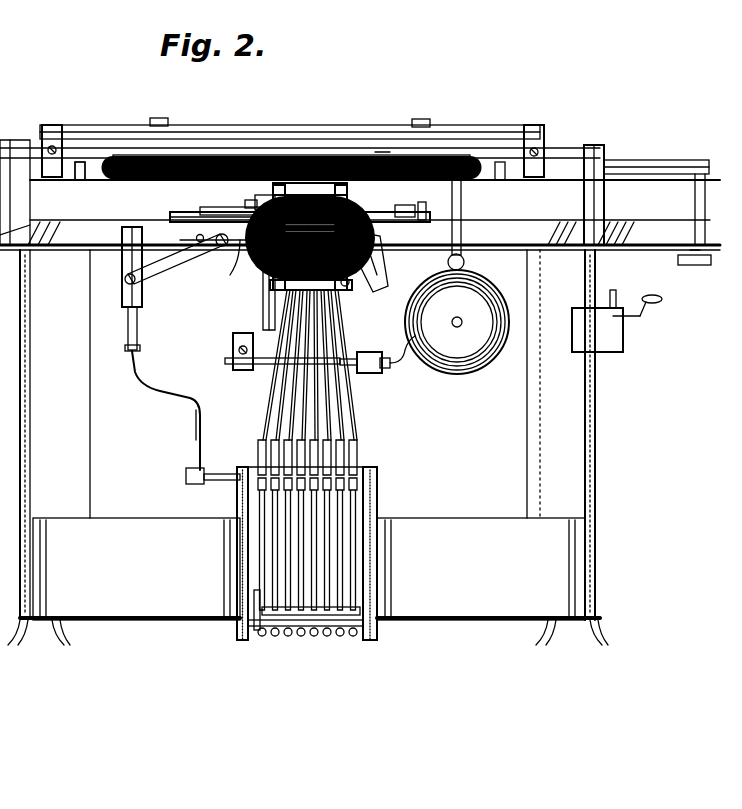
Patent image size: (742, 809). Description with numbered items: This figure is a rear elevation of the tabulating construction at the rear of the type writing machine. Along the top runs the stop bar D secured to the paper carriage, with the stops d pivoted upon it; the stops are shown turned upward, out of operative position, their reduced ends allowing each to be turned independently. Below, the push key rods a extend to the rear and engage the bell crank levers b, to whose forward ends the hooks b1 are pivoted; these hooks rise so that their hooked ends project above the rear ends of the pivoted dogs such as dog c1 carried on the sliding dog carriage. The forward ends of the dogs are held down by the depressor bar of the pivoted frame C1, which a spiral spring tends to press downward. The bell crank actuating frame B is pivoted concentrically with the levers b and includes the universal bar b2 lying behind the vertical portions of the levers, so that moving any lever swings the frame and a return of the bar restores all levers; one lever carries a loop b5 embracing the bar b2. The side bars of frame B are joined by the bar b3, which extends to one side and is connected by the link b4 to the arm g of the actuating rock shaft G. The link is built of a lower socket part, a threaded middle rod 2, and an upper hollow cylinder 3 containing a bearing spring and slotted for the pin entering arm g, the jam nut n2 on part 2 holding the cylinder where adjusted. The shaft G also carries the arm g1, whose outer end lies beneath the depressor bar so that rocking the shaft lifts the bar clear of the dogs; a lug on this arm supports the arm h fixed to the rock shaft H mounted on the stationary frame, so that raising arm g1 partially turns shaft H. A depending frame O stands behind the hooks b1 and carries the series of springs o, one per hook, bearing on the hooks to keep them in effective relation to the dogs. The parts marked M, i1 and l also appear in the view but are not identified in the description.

The stops d is at (278, 156).
The arm h is at (306, 156).
The hooks b1 is at (341, 180).
The rock shaft H is at (381, 152).
The stop bar D is at (72, 186).
The rods a is at (138, 181).
The arm g1 is at (255, 207).
The pivoted frame C1 is at (270, 201).
The dog c1 is at (311, 253).
The horizontal plate M is at (200, 214).
The arm g is at (195, 266).
The rock shaft G is at (282, 302).
The link part 3 is at (130, 312).
The jam nut n2 is at (141, 348).
The link b4 is at (160, 392).
The link middle portion 2 is at (177, 420).
The springs o is at (351, 291).
The depending frame O is at (336, 292).
The connecting wires i1 is at (349, 413).
The slide block l is at (192, 462).
The bar b3 is at (240, 474).
The actuating frame B is at (254, 577).
The bell crank levers b is at (310, 632).
The universal bar b2 is at (346, 634).
The loop b5 is at (260, 632).